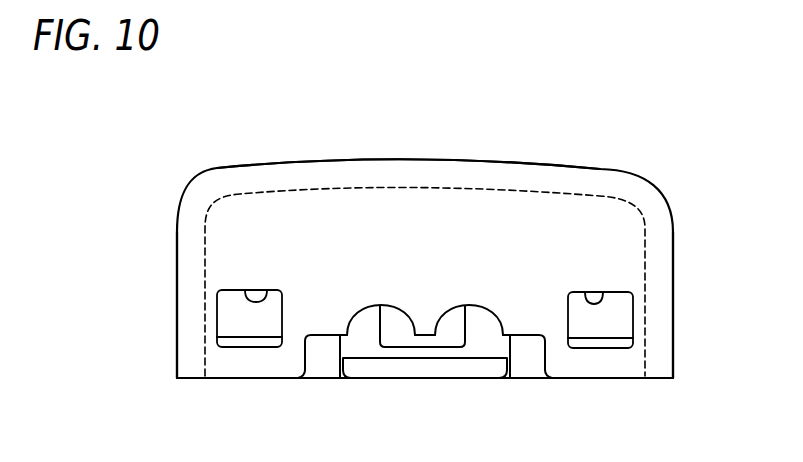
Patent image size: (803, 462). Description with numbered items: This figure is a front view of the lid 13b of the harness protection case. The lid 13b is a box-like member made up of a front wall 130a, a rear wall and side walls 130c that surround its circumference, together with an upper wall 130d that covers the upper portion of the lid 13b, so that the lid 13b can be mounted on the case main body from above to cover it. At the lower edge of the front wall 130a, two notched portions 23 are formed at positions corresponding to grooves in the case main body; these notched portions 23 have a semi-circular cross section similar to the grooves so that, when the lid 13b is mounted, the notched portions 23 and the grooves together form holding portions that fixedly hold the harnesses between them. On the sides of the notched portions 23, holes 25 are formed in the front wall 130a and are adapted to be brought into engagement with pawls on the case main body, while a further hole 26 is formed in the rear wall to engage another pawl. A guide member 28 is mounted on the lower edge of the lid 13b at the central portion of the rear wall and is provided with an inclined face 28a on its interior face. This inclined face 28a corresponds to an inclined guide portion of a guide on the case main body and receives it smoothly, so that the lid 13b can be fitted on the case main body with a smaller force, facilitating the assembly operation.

The lid 13b is at (194, 168).
The upper wall 130d is at (427, 160).
The side walls 130c is at (176, 272).
The front wall 130a is at (449, 257).
The holes 25 is at (259, 296).
The notched portions 23 is at (368, 322).
The hole 26 is at (458, 342).
The guide member 28 is at (366, 350).
The inclined face 28a is at (485, 366).